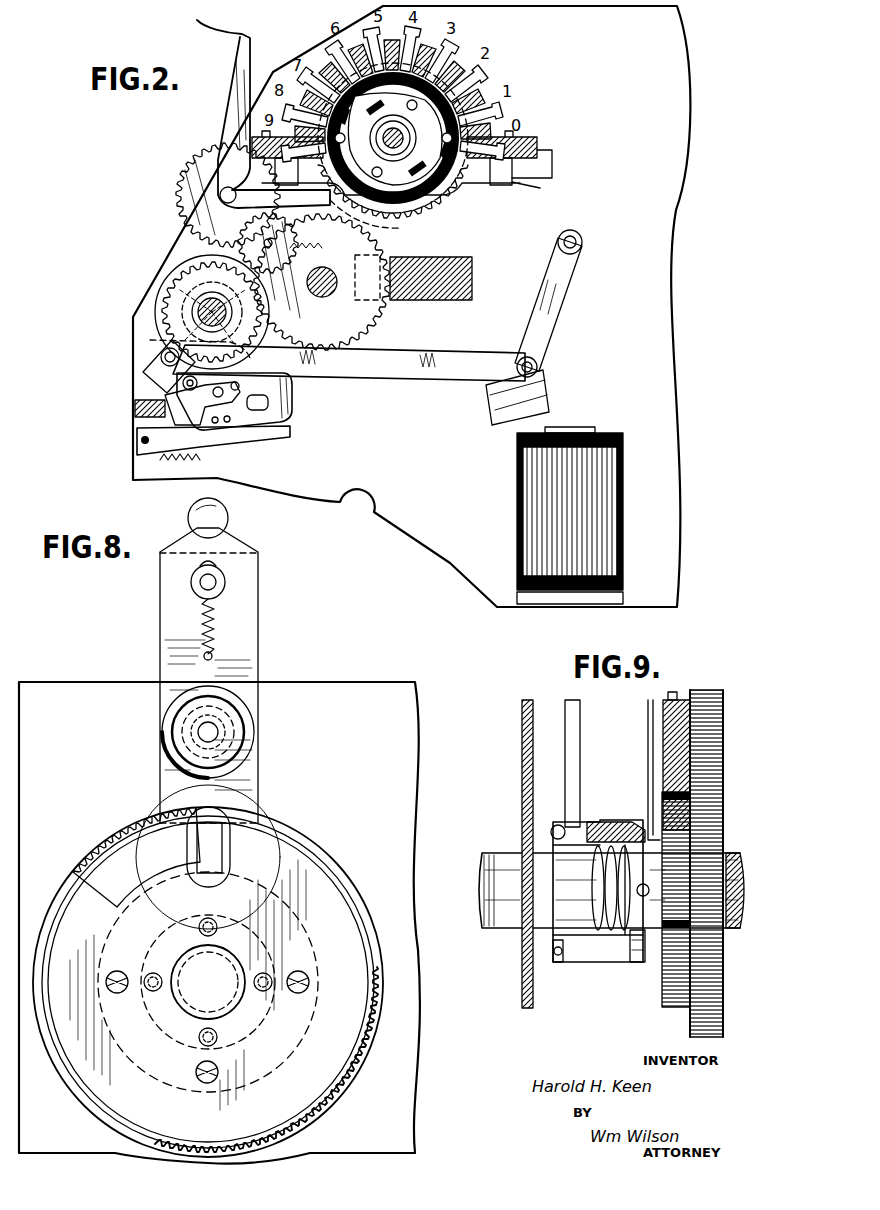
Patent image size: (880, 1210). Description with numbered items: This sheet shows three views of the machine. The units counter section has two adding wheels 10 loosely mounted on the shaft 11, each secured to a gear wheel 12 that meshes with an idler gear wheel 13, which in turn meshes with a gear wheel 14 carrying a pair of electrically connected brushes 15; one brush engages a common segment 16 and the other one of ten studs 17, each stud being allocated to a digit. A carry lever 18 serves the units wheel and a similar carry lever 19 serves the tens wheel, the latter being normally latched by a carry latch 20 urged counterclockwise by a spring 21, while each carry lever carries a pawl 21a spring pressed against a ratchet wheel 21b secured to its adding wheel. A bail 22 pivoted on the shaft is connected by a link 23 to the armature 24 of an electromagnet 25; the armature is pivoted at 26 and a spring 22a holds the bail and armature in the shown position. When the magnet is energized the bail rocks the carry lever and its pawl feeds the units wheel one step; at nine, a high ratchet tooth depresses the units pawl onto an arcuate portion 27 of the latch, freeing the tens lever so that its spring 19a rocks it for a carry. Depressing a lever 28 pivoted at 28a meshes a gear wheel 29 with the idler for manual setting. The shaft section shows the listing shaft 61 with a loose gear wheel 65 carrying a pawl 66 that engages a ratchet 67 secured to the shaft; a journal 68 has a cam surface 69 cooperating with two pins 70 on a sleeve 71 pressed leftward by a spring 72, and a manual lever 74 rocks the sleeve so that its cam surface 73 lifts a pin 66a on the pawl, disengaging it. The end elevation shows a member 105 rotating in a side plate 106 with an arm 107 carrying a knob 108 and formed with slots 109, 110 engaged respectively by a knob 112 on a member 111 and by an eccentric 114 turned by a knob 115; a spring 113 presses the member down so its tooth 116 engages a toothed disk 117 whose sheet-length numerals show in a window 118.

In FIG. 2, the adding wheel 10 is at (160, 304).
In FIG. 2, the shaft 11 is at (205, 305).
In FIG. 2, the gear wheel 12 is at (240, 316).
In FIG. 2, the idler gear wheel 13 is at (368, 318).
In FIG. 2, the gear wheel 14 is at (440, 235).
In FIG. 2, the brushes 15 is at (398, 226).
In FIG. 2, the common segment 16 is at (440, 216).
In FIG. 2, the studs 17 is at (465, 95).
In FIG. 2, the carry lever 18 is at (210, 430).
In FIG. 2, the carry lever 19 is at (270, 402).
In FIG. 2, the spring 19a is at (200, 262).
In FIG. 2, the carry latch 20 is at (283, 423).
In FIG. 2, the spring 21 is at (180, 468).
In FIG. 2, the pawl 21a is at (211, 397).
In FIG. 2, the ratchet wheel 21b is at (148, 340).
In FIG. 2, the bail 22 is at (148, 365).
In FIG. 2, the spring 22a is at (303, 279).
In FIG. 2, the link 23 is at (415, 374).
In FIG. 2, the armature 24 is at (532, 398).
In FIG. 2, the electromagnet 25 is at (540, 487).
In FIG. 2, the pivot 26 is at (583, 245).
In FIG. 2, the arcuate portion 27 is at (300, 375).
In FIG. 2, the lever 28 is at (232, 118).
In FIG. 2, the pivot 28a is at (277, 243).
In FIG. 2, the gear wheel 29 is at (192, 176).
In FIG. 9, the listing shaft 61 is at (503, 930).
In FIG. 9, the gear wheel 65 is at (705, 778).
In FIG. 9, the pawl 66 is at (672, 735).
In FIG. 9, the pin 66a is at (650, 830).
In FIG. 9, the ratchet 67 is at (683, 857).
In FIG. 9, the journal 68 is at (526, 935).
In FIG. 9, the cam surface 69 is at (558, 964).
In FIG. 9, the pins 70 is at (558, 824).
In FIG. 9, the sleeve 71 is at (595, 965).
In FIG. 9, the spring 72 is at (616, 822).
In FIG. 9, the cam surface 73 is at (642, 963).
In FIG. 9, the manual lever 74 is at (582, 748).
In FIG. 8, the member 105 is at (335, 1068).
In FIG. 8, the side plate 106 is at (393, 838).
In FIG. 8, the arm 107 is at (260, 650).
In FIG. 8, the knob 108 is at (222, 520).
In FIG. 8, the slot 109 is at (220, 568).
In FIG. 8, the slot 110 is at (236, 700).
In FIG. 8, the member 111 is at (165, 556).
In FIG. 8, the knob 112 is at (192, 583).
In FIG. 8, the spring 113 is at (200, 614).
In FIG. 8, the eccentric 114 is at (220, 726).
In FIG. 8, the knob 115 is at (163, 733).
In FIG. 8, the tooth 116 is at (215, 824).
In FIG. 8, the toothed disk 117 is at (125, 855).
In FIG. 8, the window 118 is at (255, 855).